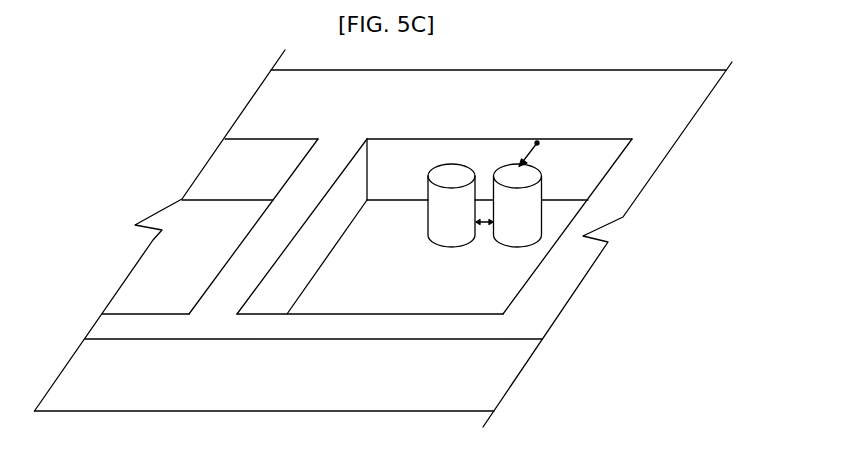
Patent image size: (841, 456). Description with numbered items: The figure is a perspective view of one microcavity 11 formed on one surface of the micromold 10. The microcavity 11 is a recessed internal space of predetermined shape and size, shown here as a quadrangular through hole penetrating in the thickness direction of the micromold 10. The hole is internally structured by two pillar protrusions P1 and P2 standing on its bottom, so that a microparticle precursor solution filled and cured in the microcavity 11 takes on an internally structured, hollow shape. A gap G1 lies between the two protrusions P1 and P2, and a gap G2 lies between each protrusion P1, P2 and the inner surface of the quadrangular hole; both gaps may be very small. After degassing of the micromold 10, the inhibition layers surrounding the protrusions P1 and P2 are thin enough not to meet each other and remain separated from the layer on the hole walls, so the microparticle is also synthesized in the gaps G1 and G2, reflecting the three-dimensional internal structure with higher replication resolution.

The micromold 10 is at (384, 238).
The microcavity 11 is at (367, 226).
The pillar protrusion P1 is at (455, 173).
The pillar protrusion P2 is at (518, 172).
The gap G1 is at (485, 231).
The gap G2 is at (535, 154).